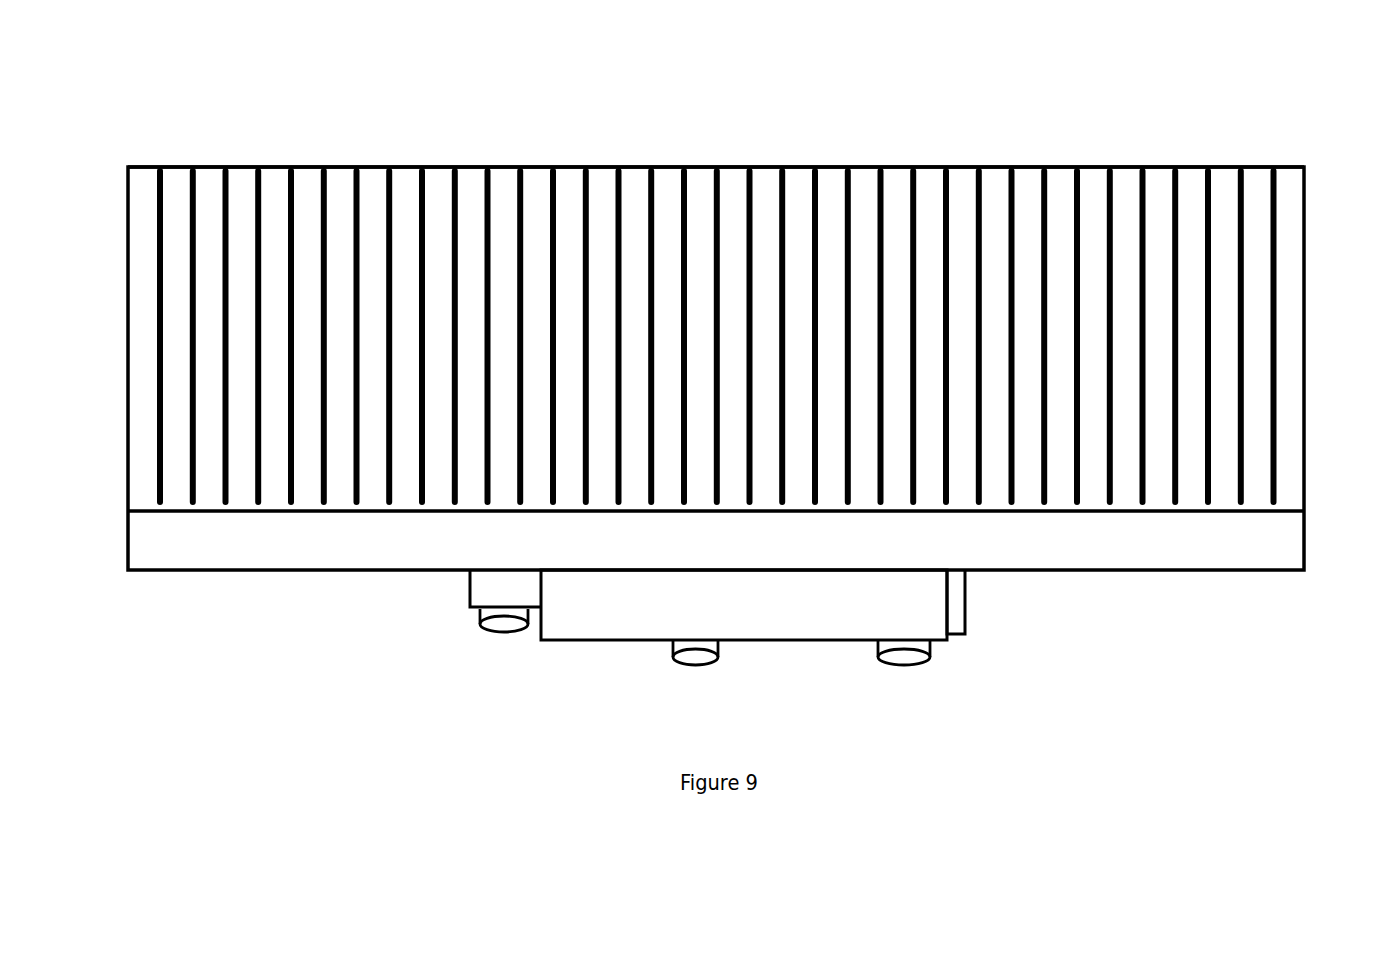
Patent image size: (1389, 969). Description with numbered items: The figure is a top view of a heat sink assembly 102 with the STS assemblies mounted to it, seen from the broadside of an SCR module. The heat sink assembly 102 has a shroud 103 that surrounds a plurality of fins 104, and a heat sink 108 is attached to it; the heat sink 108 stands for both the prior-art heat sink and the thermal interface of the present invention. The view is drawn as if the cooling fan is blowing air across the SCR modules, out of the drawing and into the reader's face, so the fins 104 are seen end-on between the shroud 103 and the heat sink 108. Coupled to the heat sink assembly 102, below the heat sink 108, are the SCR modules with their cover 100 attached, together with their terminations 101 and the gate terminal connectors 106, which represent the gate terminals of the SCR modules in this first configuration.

The cover 100 is at (752, 617).
The terminations 101 is at (493, 633).
The heat sink assembly 102 is at (709, 310).
The shroud 103 is at (125, 169).
The fins 104 is at (155, 338).
The gate terminal connectors 106 is at (967, 618).
The heat sink 108 is at (710, 564).